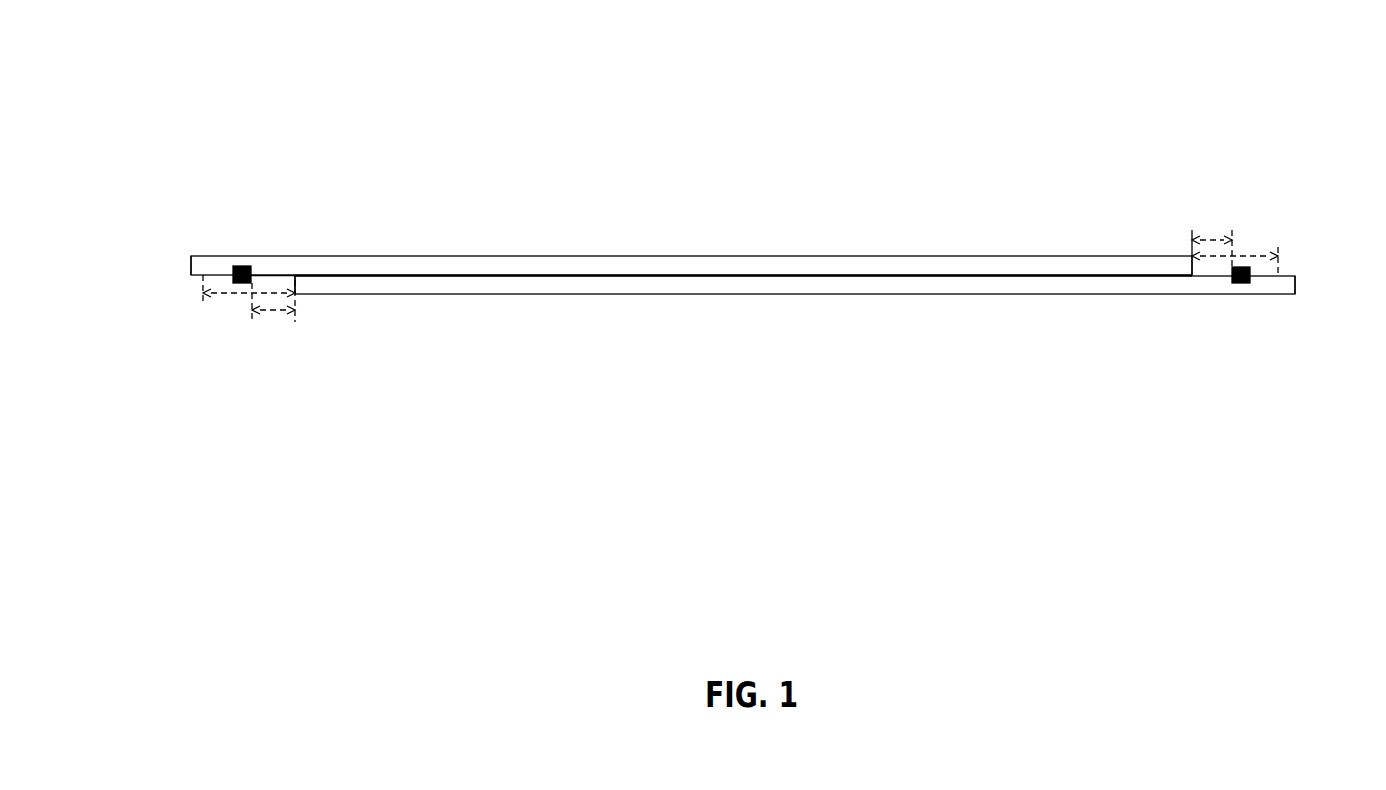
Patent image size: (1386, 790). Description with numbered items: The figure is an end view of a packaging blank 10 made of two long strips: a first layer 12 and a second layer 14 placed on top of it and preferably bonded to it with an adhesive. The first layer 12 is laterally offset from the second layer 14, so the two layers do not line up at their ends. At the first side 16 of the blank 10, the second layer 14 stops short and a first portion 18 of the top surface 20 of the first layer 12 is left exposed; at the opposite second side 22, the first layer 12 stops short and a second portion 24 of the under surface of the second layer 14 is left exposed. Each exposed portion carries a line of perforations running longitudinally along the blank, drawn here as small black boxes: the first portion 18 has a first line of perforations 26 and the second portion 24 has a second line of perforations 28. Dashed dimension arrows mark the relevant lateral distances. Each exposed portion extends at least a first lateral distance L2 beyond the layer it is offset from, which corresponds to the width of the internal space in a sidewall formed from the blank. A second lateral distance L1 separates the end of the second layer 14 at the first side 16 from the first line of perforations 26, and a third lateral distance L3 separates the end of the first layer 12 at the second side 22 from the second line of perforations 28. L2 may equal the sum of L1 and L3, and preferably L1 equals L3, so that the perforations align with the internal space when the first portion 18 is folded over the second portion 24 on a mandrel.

The packaging blank 10 is at (902, 97).
The first layer 12 is at (743, 294).
The second layer 14 is at (743, 256).
The first side 16 is at (1294, 294).
The first portion 18 is at (1287, 273).
The top surface 20 is at (1105, 276).
The second side 22 is at (190, 267).
The second portion 24 is at (294, 294).
The first line of perforations 26 is at (282, 275).
The second line of perforations 28 is at (250, 267).
The second lateral distance L1 is at (1215, 233).
The first lateral distance L2 is at (225, 295).
The third lateral distance L3 is at (268, 311).